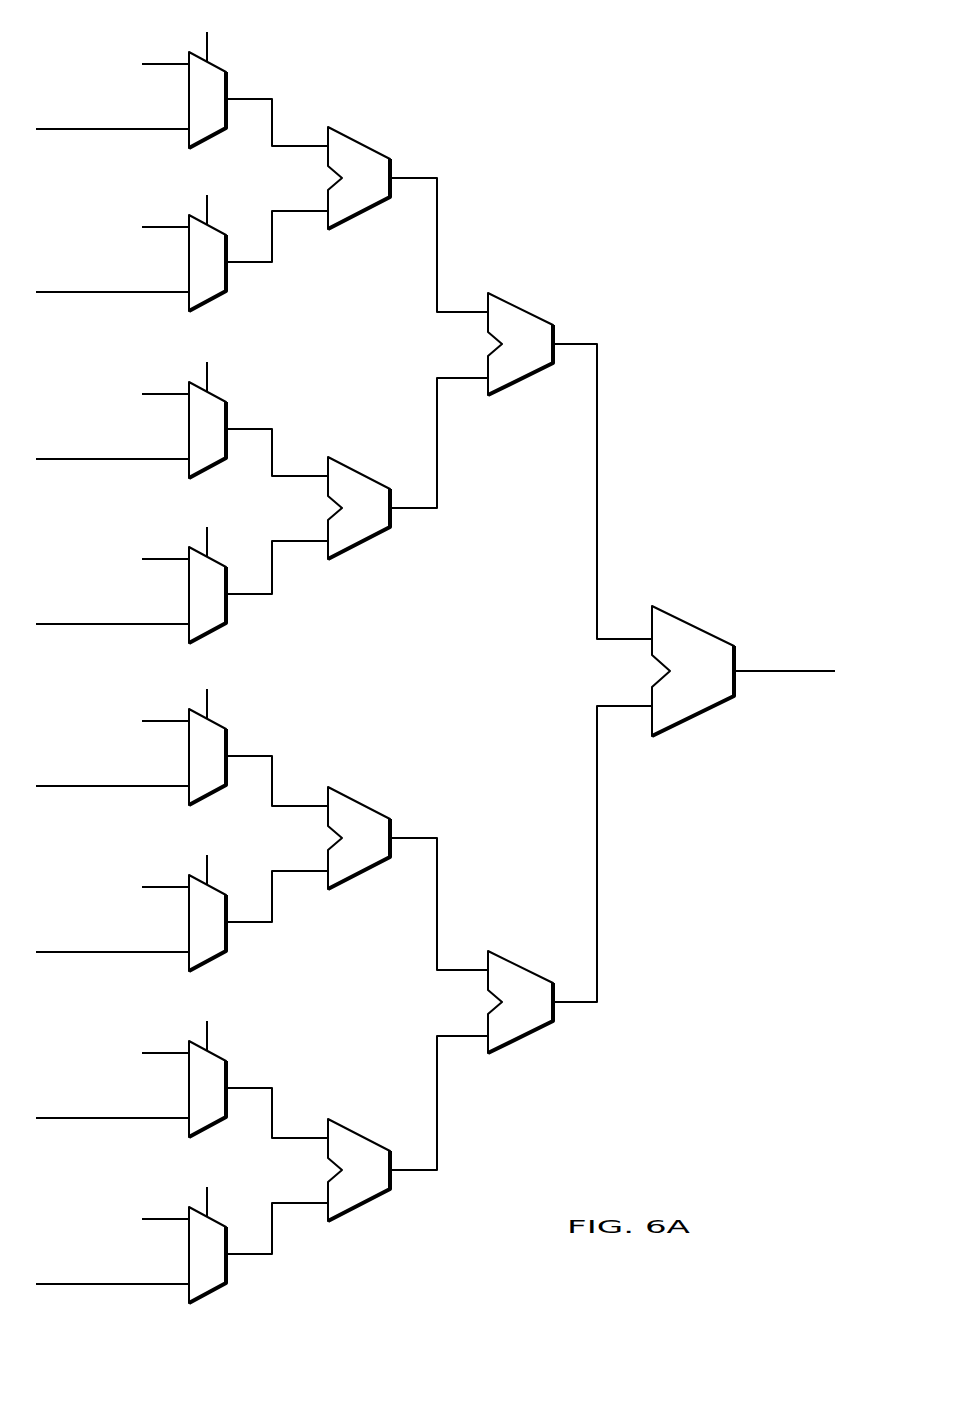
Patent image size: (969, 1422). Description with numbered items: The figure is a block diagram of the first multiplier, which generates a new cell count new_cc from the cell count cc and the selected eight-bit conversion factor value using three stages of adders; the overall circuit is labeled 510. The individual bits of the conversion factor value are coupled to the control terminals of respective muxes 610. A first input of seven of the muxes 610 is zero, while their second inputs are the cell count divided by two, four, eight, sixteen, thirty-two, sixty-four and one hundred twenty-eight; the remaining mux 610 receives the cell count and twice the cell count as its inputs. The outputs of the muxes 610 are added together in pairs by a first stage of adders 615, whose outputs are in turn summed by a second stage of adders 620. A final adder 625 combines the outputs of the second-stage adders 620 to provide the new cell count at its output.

The cycle count adjustment circuit 510 is at (435, 659).
The mux 610 is at (228, 85).
The first-stage adder 615 is at (358, 1132).
The second-stage adder 620 is at (521, 962).
The third-stage adder 625 is at (713, 682).